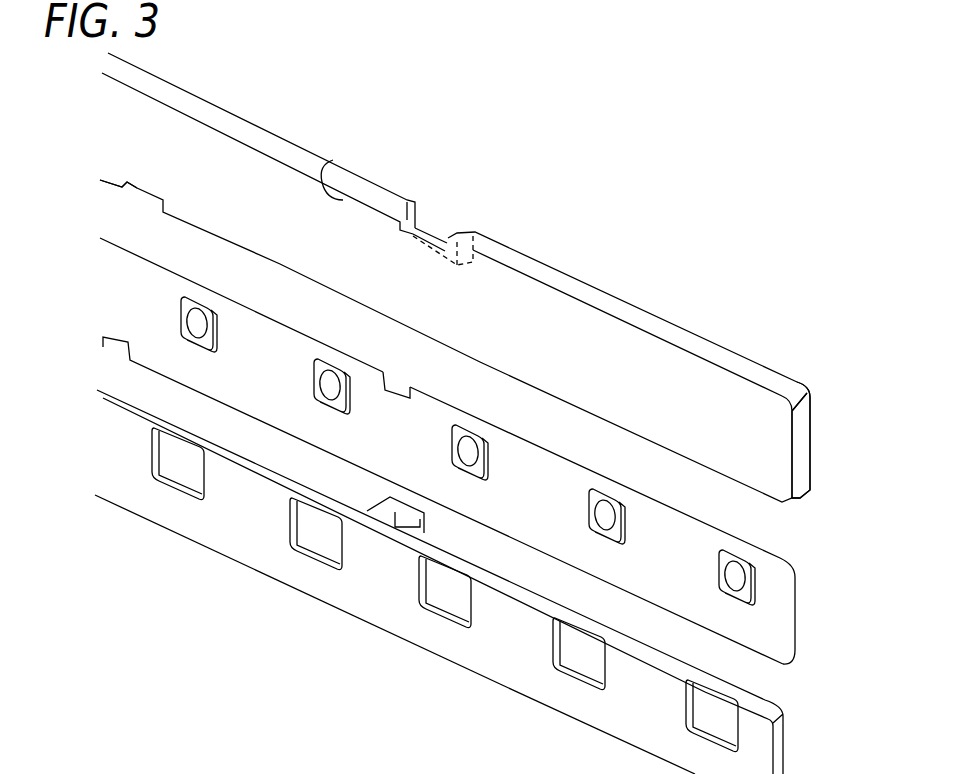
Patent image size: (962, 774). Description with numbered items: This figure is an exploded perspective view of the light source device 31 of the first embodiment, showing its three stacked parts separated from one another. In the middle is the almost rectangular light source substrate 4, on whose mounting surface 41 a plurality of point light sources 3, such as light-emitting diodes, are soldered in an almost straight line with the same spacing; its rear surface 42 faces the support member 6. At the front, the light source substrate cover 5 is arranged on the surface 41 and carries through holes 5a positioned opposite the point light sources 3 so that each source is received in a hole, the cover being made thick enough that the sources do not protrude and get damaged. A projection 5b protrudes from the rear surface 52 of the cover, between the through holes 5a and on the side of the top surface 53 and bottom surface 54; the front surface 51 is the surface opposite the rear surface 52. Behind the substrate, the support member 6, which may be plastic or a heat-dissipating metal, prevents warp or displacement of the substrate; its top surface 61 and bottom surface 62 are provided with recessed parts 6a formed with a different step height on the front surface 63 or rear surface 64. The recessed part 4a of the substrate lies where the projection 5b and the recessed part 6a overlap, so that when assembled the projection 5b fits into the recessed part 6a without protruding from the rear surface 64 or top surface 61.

The point light source 3 is at (613, 497).
The light source substrate 4 is at (520, 464).
The recessed part 4a is at (390, 390).
The surface 41 is at (683, 543).
The rear surface 42 is at (777, 555).
The light source substrate cover 5 is at (226, 544).
The through hole 5a is at (162, 484).
The projection 5b is at (390, 512).
The front surface 51 is at (600, 728).
The rear surface 52 is at (772, 692).
The top surface 53 is at (118, 395).
The bottom surface 54 is at (112, 507).
The support member 6 is at (257, 137).
The recessed part 6a is at (143, 197).
The top surface 61 is at (302, 153).
The bottom surface 62 is at (106, 184).
The front surface 63 is at (333, 160).
The rear surface 64 is at (753, 358).
The light source device 31 is at (407, 690).